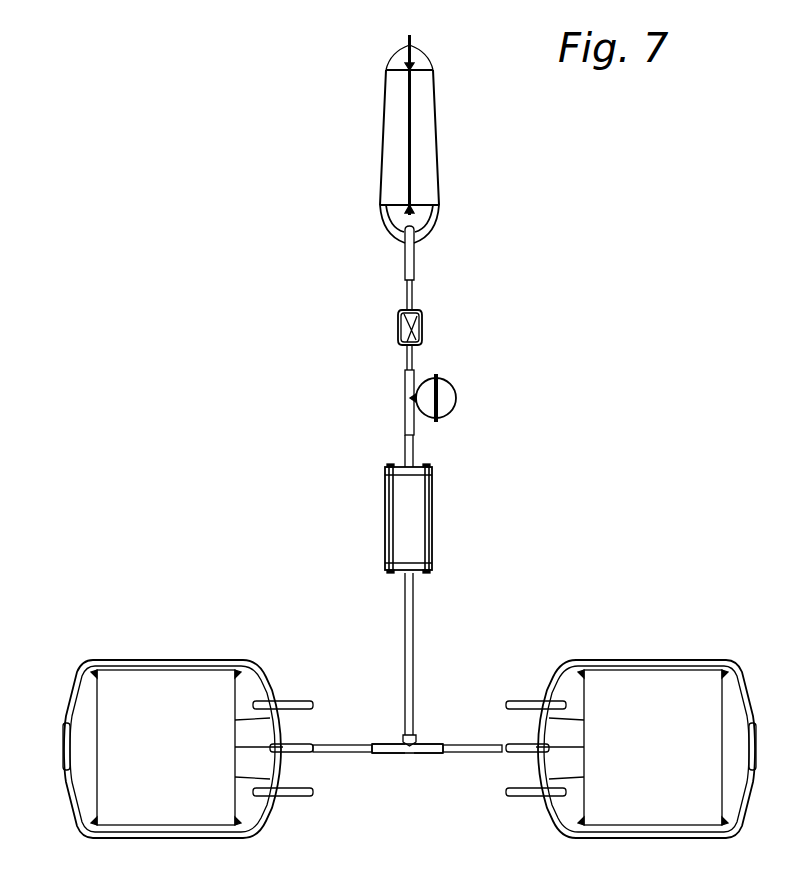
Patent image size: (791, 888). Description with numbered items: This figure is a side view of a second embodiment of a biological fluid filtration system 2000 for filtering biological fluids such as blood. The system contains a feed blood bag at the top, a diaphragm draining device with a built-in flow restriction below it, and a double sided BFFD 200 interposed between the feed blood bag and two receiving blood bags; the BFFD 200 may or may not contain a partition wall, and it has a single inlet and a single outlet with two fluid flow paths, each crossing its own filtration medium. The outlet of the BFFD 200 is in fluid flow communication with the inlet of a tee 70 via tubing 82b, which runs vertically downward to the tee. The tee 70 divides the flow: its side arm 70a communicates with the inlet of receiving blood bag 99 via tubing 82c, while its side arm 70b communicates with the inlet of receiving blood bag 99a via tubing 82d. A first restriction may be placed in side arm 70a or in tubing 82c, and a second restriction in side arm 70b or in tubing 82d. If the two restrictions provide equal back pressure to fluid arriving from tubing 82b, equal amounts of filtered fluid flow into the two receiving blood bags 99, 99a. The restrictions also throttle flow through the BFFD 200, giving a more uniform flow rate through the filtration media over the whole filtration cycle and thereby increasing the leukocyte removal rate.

The fishing rig assembly 2000 is at (67, 862).
The double sided BFFD 200 is at (380, 503).
The tubing 82b is at (407, 645).
The tee 70 is at (407, 753).
The side arm 70a is at (382, 742).
The side arm 70b is at (432, 740).
The tubing 82c is at (343, 752).
The tubing 82d is at (470, 753).
The receiving blood bag 99 is at (150, 800).
The receiving blood bag 99a is at (638, 813).